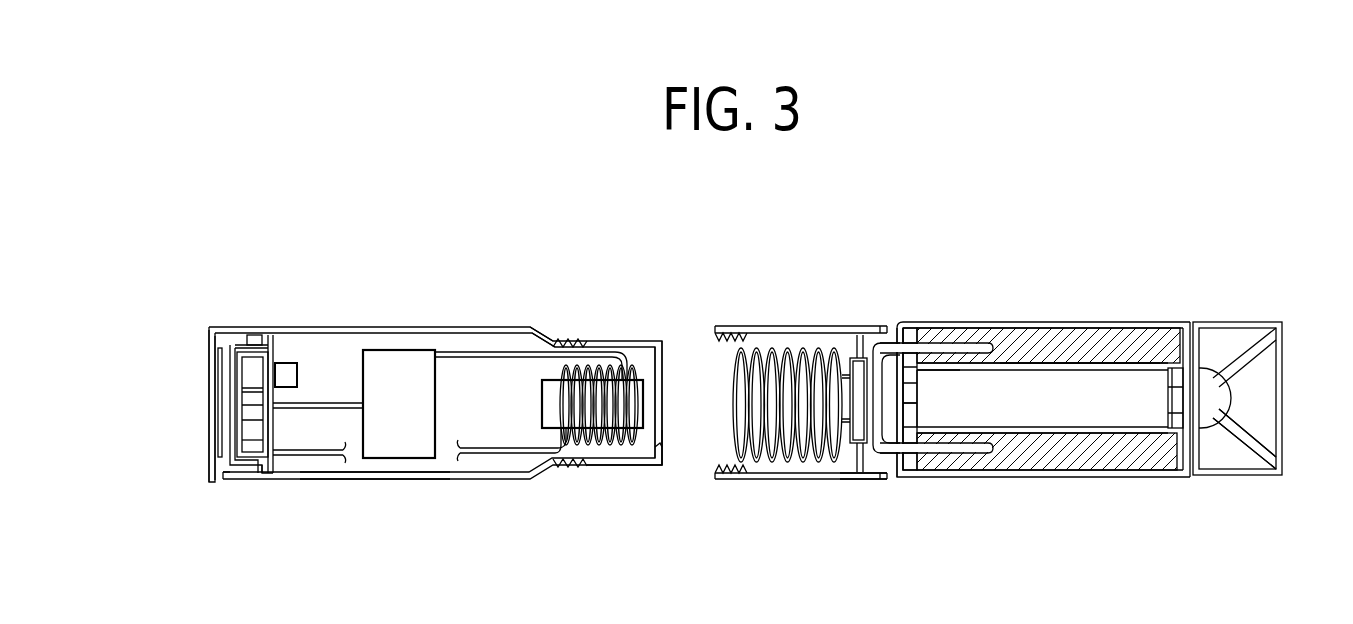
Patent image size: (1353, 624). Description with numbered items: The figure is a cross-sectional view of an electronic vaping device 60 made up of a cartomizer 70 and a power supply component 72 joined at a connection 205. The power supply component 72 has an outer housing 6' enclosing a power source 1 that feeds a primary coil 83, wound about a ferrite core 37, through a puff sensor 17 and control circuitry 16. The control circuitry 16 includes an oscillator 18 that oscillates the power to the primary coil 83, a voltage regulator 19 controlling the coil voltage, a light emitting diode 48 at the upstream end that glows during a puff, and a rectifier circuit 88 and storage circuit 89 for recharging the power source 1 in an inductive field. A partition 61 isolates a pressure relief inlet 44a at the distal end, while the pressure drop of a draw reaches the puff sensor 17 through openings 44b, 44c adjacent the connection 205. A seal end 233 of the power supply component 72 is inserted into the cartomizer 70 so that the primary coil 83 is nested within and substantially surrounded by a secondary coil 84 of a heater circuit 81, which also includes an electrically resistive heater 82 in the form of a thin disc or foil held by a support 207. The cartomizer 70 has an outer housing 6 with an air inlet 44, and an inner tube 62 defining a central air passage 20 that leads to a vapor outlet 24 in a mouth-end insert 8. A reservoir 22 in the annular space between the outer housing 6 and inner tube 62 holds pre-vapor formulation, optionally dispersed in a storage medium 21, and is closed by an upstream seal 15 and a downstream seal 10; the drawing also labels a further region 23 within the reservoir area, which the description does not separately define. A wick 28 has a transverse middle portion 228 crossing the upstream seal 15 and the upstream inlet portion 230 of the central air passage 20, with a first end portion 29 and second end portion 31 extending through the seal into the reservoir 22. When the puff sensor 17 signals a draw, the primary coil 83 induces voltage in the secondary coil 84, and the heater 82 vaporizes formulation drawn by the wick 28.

The power source 1 is at (386, 361).
The outer housing 6 is at (1043, 429).
The outer housing 6' is at (375, 504).
The mouth-end insert 8 is at (1262, 388).
The downstream seal 10 is at (1185, 332).
The upstream seal 15 is at (892, 342).
The control circuitry 16 is at (252, 356).
The puff sensor 17 is at (232, 356).
The oscillator 18 is at (255, 468).
The voltage regulator 19 is at (284, 364).
The central air passage 20 is at (1080, 424).
The storage medium 21 is at (1118, 455).
The reservoir 22 is at (1035, 462).
The insulation 23 is at (1138, 335).
The vapor outlet 24 is at (1278, 456).
The wick 28 is at (918, 412).
The first end portion 29 is at (975, 342).
The second end portion 31 is at (978, 455).
The ferrite core 37 is at (579, 450).
The air inlet 44 is at (894, 480).
The pressure relief inlet 44a is at (220, 484).
The opening 44b is at (846, 480).
The opening 44c is at (657, 448).
The light emitting diode 48 is at (217, 400).
The electronic vaping device 60 is at (410, 256).
The partition 61 is at (268, 477).
The inner tube 62 is at (1053, 371).
The cartomizer 70 is at (1090, 300).
The power supply component 72 is at (531, 304).
The heater circuit 81 is at (774, 303).
The electrically resistive heater 82 is at (853, 359).
The primary coil 83 is at (533, 434).
The secondary coil 84 is at (781, 465).
The rectifier circuit 88 is at (251, 425).
The storage circuit 89 is at (251, 392).
The connection 205 is at (563, 337).
The support 207 is at (860, 334).
The transverse middle portion 228 is at (912, 344).
The upstream inlet portion 230 is at (930, 380).
The seal end 233 is at (670, 340).